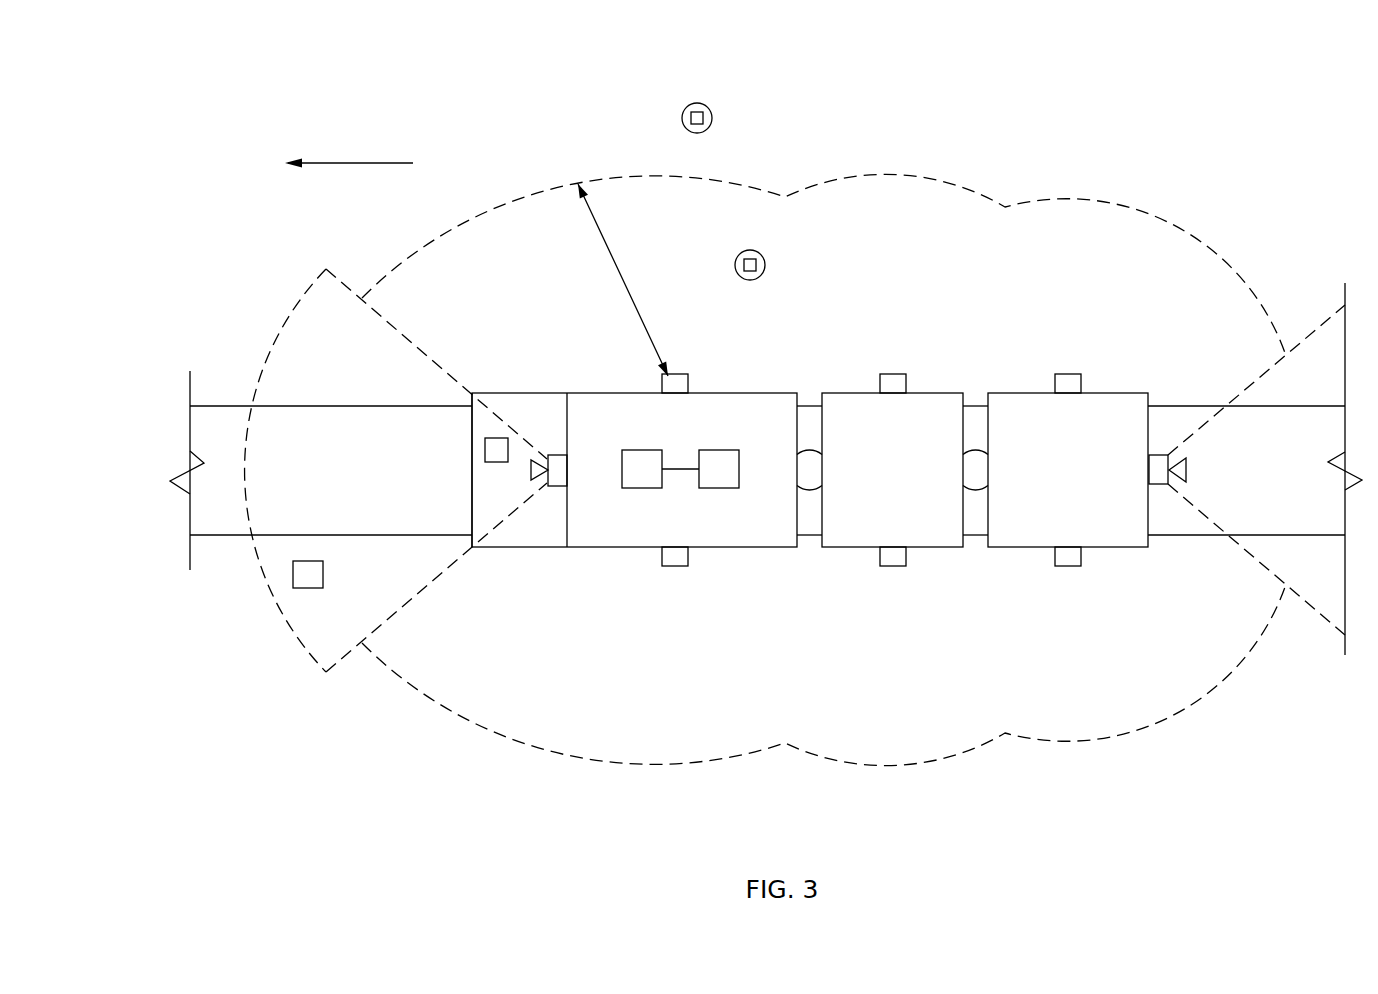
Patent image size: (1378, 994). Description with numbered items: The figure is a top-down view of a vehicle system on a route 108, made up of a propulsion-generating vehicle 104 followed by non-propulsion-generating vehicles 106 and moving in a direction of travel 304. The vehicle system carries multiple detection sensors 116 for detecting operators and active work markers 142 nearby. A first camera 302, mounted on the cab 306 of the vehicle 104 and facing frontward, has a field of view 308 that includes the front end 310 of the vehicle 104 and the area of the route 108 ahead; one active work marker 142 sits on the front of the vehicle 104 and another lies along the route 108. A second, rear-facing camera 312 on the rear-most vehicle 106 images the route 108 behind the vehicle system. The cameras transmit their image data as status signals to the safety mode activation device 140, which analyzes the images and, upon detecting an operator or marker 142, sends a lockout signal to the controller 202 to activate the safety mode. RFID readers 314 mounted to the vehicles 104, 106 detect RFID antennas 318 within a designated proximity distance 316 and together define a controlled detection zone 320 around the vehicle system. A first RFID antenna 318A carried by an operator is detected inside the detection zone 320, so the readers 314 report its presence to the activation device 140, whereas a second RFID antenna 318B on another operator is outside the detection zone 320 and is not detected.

The propulsion-generating vehicle 104 is at (747, 548).
The non-propulsion-generating vehicle 106 is at (940, 548).
The route 108 is at (369, 536).
The detection sensors 116 is at (745, 438).
The safety mode activation device 140 is at (643, 449).
The active work markers 142 is at (484, 444).
The controller 202 is at (715, 449).
The first camera 302 is at (557, 486).
The direction of travel 304 is at (352, 163).
The cab 306 is at (567, 429).
The field of view 308 is at (277, 327).
The front end 310 is at (472, 500).
The second, rear-facing camera 312 is at (1157, 455).
The RFID readers 314 is at (675, 373).
The designated proximity distance 316 is at (636, 279).
The RFID antennas 318 is at (764, 161).
The first RFID antenna 318A is at (766, 265).
The second RFID antenna 318B is at (713, 118).
The detection zone 320 is at (899, 170).